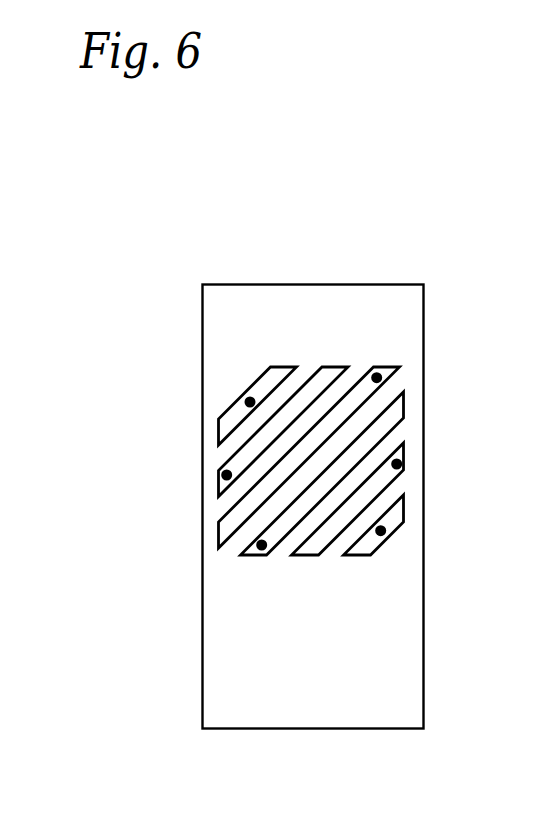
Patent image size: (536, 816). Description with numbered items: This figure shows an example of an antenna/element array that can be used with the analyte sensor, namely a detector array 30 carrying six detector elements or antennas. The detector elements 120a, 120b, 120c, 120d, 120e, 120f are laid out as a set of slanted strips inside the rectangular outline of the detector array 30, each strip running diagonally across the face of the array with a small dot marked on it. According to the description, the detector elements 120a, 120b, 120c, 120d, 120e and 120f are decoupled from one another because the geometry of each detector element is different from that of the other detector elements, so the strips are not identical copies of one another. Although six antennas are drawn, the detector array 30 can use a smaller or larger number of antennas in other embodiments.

The detector array 30 is at (388, 225).
The detector element 120a is at (270, 368).
The detector element 120b is at (317, 369).
The detector element 120c is at (387, 368).
The detector element 120d is at (406, 398).
The detector element 120e is at (407, 456).
The detector element 120f is at (406, 508).